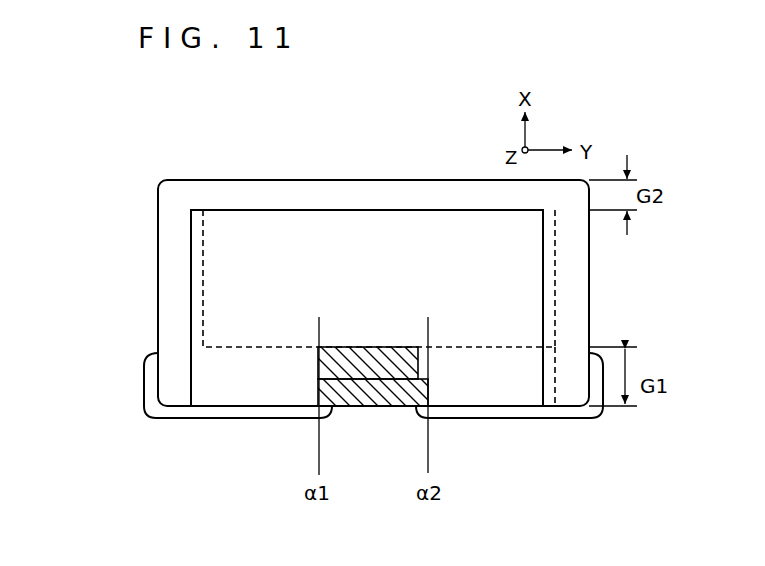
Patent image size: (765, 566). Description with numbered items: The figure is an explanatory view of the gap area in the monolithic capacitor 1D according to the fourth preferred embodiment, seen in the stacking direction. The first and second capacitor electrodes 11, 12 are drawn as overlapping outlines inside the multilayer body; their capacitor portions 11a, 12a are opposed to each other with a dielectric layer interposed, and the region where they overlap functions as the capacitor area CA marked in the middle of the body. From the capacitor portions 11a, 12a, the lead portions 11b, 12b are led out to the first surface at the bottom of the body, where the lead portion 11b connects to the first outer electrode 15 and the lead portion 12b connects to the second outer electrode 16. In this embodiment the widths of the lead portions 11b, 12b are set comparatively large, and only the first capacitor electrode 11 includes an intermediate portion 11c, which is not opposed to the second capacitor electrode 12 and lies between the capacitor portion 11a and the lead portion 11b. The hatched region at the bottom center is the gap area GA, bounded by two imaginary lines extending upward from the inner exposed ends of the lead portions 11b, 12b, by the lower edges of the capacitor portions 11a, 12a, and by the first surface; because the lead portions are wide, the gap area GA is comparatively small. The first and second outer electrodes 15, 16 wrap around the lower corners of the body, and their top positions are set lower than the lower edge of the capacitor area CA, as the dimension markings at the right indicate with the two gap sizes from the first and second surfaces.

The monolithic capacitor 1D is at (284, 121).
The first capacitor electrode 11 is at (239, 207).
The second capacitor electrode 12 is at (338, 263).
The capacitor portion 11a is at (437, 248).
The capacitor portion 12a is at (367, 165).
The lead portion 11b is at (247, 398).
The intermediate portion 11c is at (350, 408).
The lead portion 12b is at (556, 390).
The first outer electrode 15 is at (152, 384).
The second outer electrode 16 is at (591, 412).
The gap area GA is at (385, 406).
The capacitor area CA is at (381, 287).